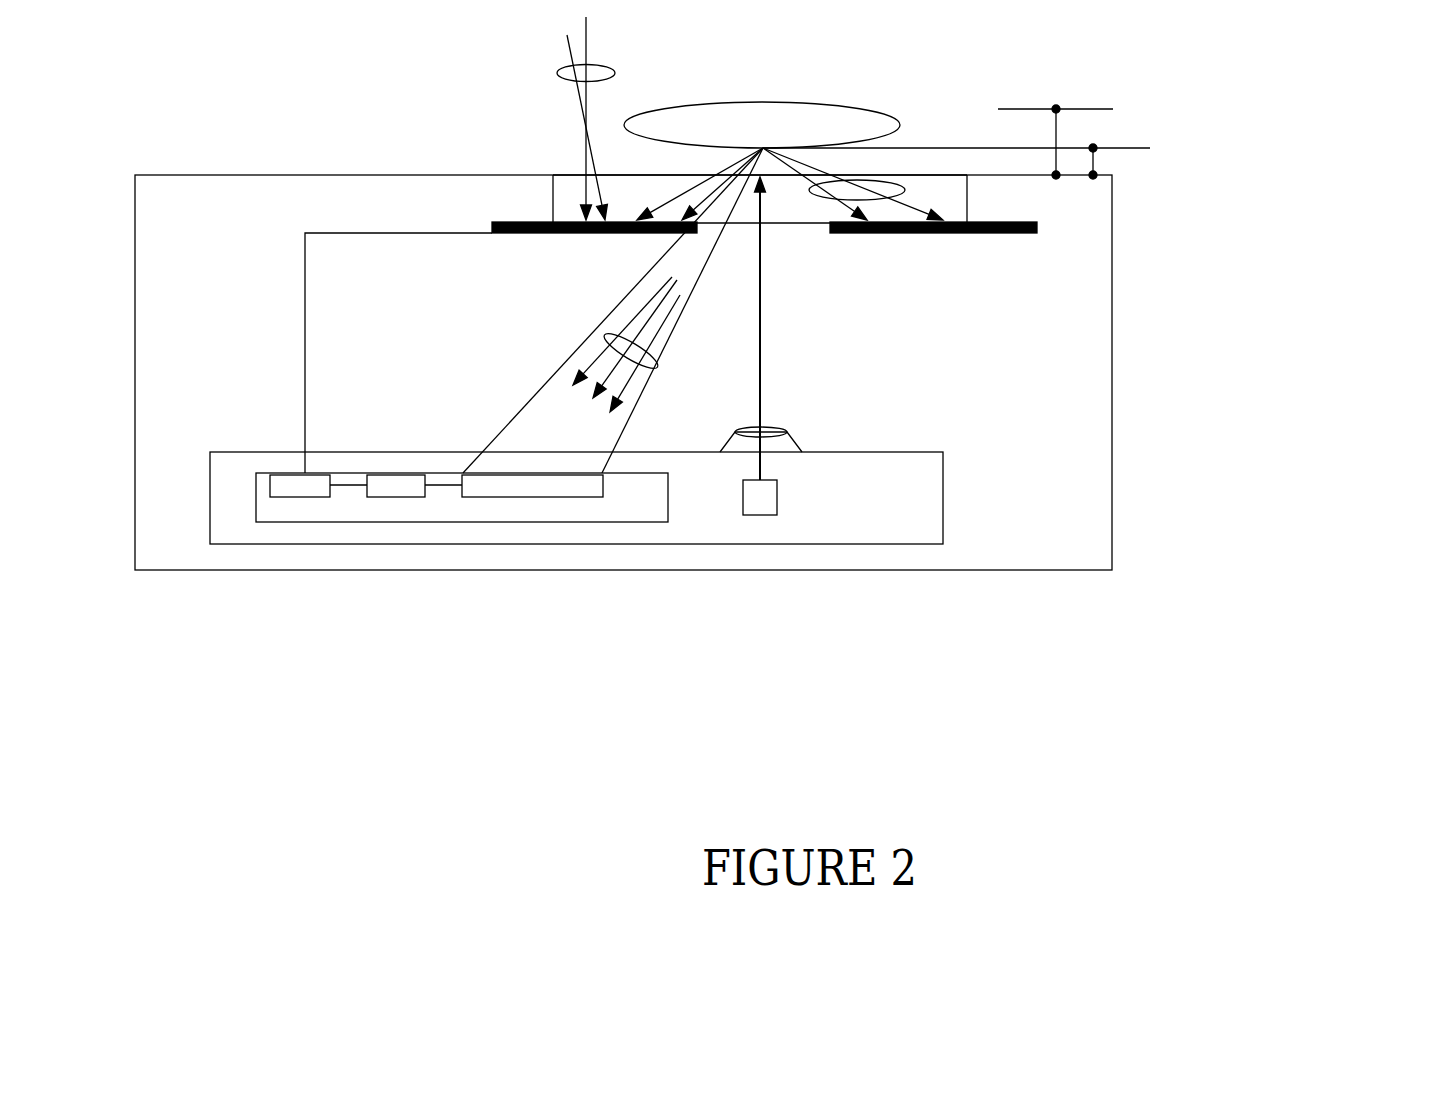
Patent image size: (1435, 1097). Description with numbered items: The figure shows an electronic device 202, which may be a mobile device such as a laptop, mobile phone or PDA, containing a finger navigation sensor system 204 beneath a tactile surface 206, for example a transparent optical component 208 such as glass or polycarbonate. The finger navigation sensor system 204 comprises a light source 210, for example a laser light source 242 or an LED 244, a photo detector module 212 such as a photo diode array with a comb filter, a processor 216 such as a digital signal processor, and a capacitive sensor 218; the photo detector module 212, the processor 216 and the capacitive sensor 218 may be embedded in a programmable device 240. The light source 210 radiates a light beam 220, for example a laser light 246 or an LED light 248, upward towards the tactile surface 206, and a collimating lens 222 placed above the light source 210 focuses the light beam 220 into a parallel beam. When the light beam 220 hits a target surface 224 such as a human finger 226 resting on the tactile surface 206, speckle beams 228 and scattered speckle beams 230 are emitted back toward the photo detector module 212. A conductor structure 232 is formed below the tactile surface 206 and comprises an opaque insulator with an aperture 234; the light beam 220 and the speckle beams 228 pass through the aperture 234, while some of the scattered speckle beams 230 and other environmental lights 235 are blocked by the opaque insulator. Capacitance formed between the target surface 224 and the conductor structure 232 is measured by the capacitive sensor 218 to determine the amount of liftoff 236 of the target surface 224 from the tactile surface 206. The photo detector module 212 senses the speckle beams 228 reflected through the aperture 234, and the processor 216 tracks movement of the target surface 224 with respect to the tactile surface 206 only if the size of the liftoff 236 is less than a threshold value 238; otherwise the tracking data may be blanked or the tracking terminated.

The electronic device 202 is at (1112, 510).
The finger navigation sensor system 204 is at (680, 544).
The tactile surface 206 is at (545, 163).
The transparent optical component 208 is at (582, 187).
The light source 210 is at (1087, 564).
The photo detector module 212 is at (513, 497).
The processor 216 is at (392, 497).
The capacitive sensor 218 is at (302, 497).
The light beam 220 is at (1060, 328).
The collimating lens 222 is at (800, 440).
The target surface 224 is at (932, 106).
The human finger 226 is at (773, 117).
The speckle beams 228 is at (603, 343).
The scattered speckle beams 230 is at (905, 189).
The conductor structure 232 is at (1037, 230).
The aperture 234 is at (782, 232).
The environmental lights 235 is at (558, 73).
The liftoff 236 is at (1095, 157).
The threshold value 238 is at (1058, 127).
The programmable device 240 is at (285, 522).
The laser light source 242 is at (1087, 564).
The LED 244 is at (777, 498).
The laser light 246 is at (1060, 328).
The LED light 248 is at (762, 372).